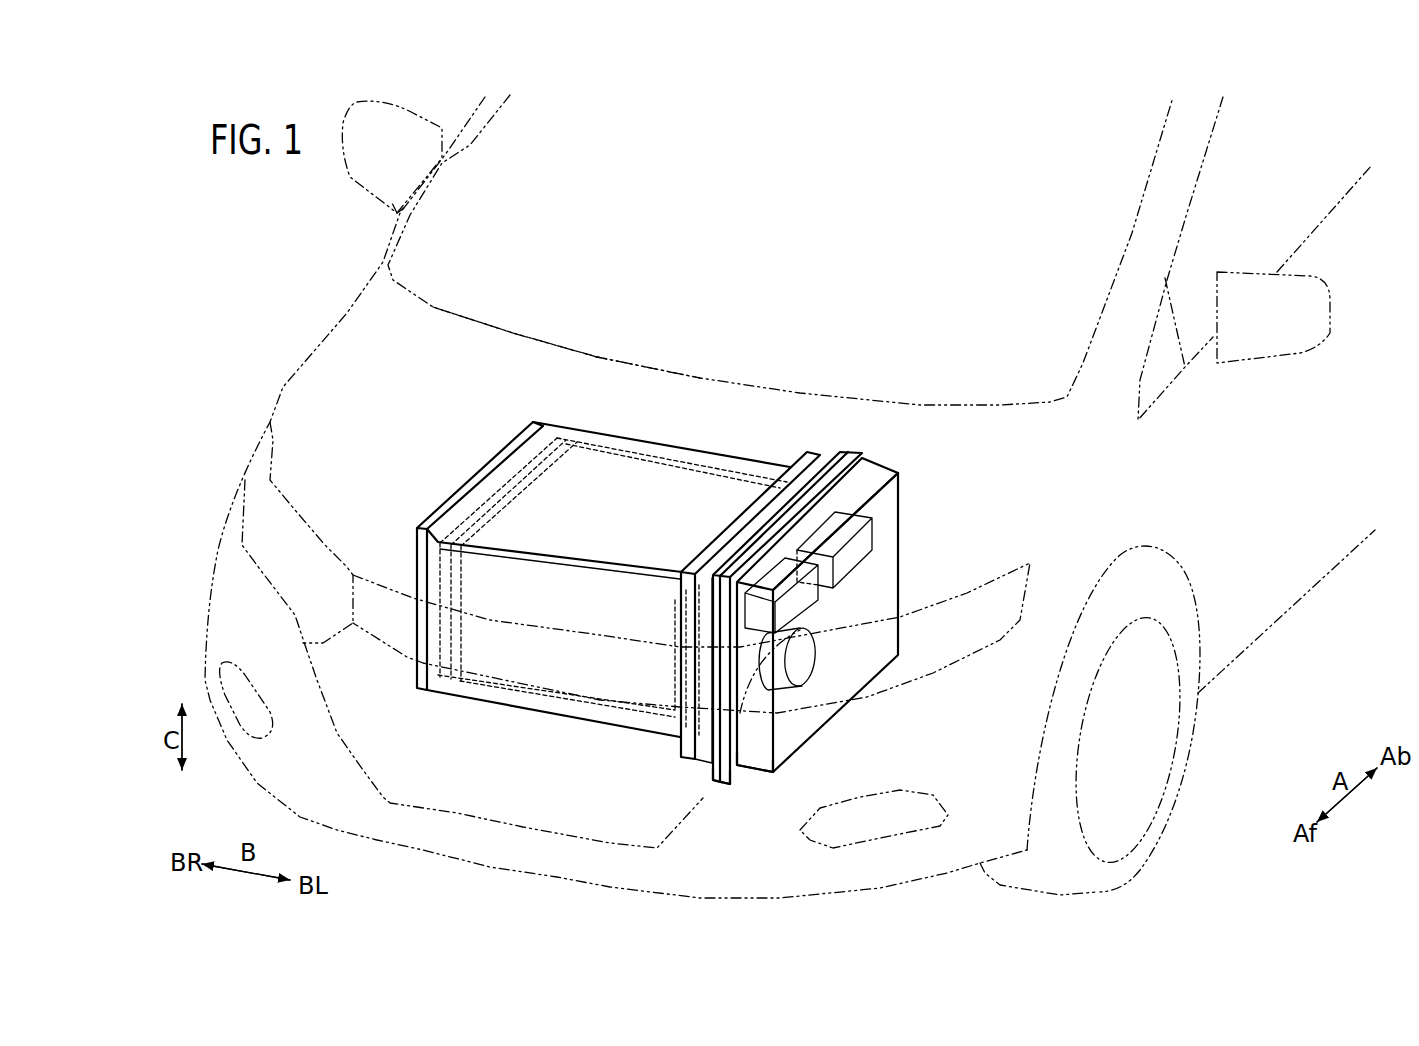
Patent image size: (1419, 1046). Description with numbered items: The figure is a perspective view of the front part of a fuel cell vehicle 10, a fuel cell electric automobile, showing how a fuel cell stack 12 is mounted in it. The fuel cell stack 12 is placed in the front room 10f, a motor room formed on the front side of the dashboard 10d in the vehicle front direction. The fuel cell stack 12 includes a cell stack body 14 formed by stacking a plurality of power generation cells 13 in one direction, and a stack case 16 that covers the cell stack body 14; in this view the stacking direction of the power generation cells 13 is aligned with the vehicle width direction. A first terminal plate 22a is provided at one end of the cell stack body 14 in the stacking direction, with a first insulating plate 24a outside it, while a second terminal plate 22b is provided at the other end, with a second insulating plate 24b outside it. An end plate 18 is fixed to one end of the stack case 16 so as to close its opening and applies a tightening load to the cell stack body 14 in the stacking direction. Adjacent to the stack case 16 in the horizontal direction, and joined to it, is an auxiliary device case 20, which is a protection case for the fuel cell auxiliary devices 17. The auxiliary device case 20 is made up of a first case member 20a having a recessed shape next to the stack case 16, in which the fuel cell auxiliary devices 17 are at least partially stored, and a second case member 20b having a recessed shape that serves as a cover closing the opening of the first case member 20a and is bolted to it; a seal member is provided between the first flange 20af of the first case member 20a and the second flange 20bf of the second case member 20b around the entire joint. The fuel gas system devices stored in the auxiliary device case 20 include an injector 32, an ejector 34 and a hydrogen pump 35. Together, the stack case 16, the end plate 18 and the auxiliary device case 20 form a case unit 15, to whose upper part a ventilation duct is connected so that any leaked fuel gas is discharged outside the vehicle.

The fuel cell vehicle 10 is at (224, 217).
The front room 10f is at (513, 398).
The dashboard 10d is at (630, 375).
The fuel cell stack 12 is at (455, 442).
The power generation cells 13 is at (603, 465).
The cell stack body 14 is at (650, 453).
The case unit 15 is at (747, 453).
The stack case 16 is at (707, 452).
The fuel cell auxiliary devices 17 is at (882, 560).
The end plate 18 is at (419, 548).
The auxiliary device case 20 is at (905, 340).
The first case member 20a is at (812, 453).
The second case member 20b is at (878, 475).
The first flange 20af is at (713, 743).
The second flange 20bf is at (737, 768).
The first terminal plate 22a is at (487, 518).
The second terminal plate 22b is at (673, 613).
The first insulating plate 24a is at (463, 526).
The second insulating plate 24b is at (690, 658).
The injector 32 is at (875, 533).
The ejector 34 is at (805, 592).
The hydrogen pump 35 is at (815, 651).